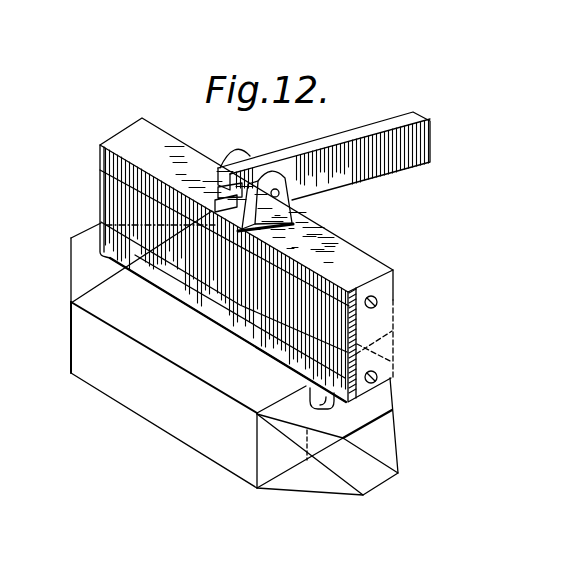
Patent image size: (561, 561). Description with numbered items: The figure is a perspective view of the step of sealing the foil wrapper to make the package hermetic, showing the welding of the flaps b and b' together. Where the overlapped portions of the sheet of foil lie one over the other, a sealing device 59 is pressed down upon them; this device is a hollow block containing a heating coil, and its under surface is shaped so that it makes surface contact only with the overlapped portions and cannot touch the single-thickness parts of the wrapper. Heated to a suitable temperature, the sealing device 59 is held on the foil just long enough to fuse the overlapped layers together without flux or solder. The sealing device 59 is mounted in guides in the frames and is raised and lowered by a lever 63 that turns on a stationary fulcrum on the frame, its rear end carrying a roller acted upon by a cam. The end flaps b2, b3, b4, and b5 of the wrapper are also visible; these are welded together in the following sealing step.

The sealing device 59 is at (348, 258).
The lever 63 is at (406, 143).
The flap b is at (196, 349).
The flap b' is at (160, 229).
The end flap b2 is at (262, 452).
The end flap b3 is at (390, 395).
The end flap b4 is at (277, 417).
The end flap b5 is at (386, 425).